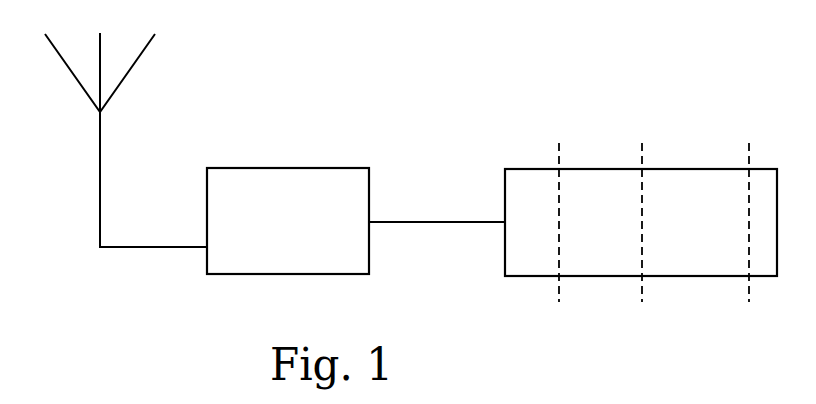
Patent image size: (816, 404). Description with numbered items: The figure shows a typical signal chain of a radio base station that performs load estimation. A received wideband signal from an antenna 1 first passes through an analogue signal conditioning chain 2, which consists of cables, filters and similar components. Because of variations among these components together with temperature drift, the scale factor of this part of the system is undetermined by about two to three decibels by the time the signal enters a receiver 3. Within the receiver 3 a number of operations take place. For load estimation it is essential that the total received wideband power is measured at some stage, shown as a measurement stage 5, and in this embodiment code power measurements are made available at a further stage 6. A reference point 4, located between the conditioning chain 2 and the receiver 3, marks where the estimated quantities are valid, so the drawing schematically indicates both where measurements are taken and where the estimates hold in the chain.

The antenna 1 is at (127, 75).
The analogue signal conditioning chain 2 is at (291, 168).
The receiver 3 is at (505, 276).
The reference point 4 is at (430, 222).
The total received wideband power measurement stage 5 is at (595, 260).
The code power measurement stage 6 is at (678, 260).